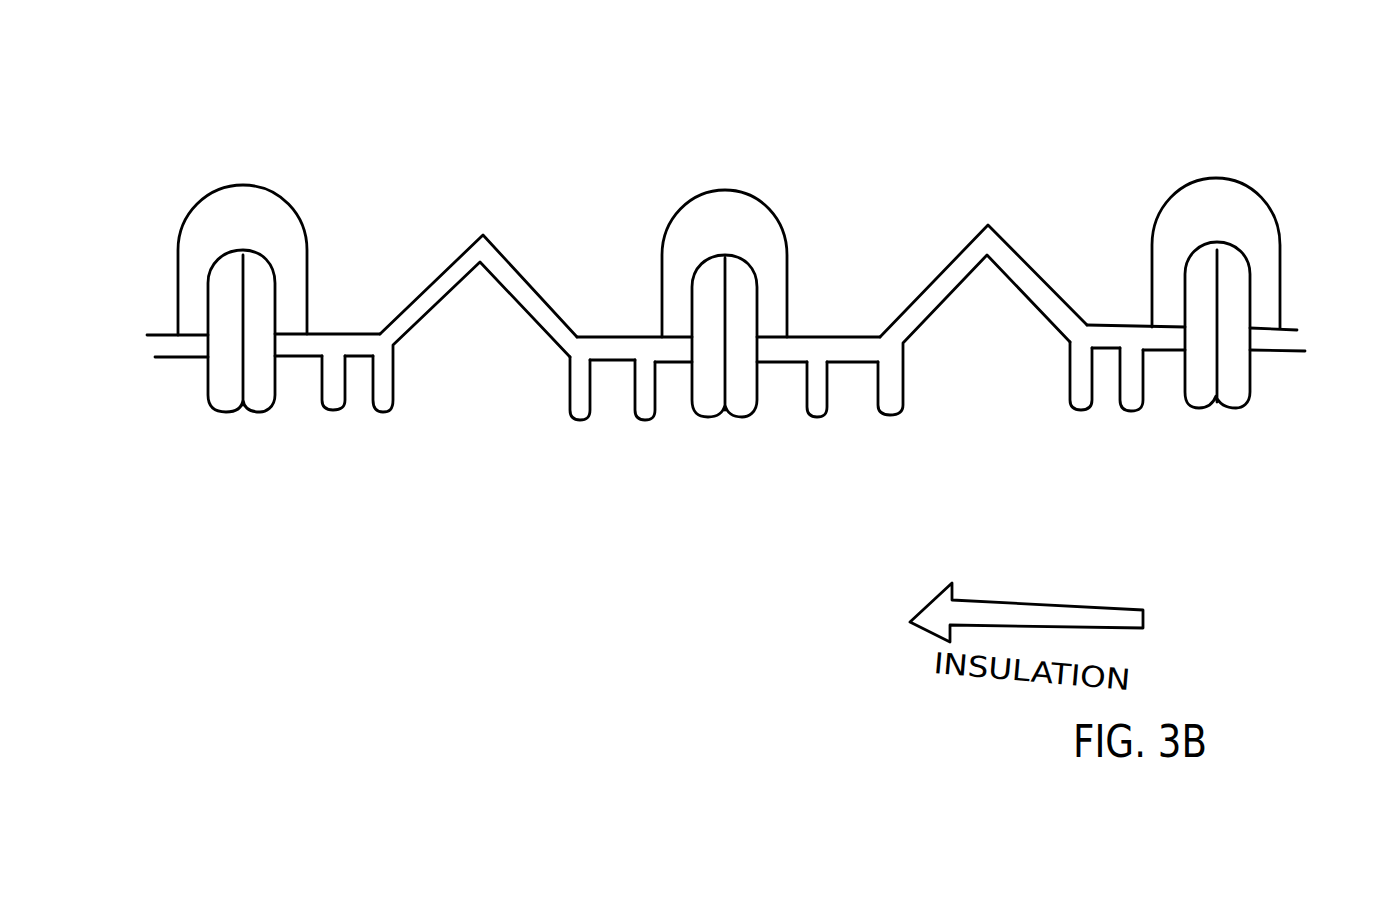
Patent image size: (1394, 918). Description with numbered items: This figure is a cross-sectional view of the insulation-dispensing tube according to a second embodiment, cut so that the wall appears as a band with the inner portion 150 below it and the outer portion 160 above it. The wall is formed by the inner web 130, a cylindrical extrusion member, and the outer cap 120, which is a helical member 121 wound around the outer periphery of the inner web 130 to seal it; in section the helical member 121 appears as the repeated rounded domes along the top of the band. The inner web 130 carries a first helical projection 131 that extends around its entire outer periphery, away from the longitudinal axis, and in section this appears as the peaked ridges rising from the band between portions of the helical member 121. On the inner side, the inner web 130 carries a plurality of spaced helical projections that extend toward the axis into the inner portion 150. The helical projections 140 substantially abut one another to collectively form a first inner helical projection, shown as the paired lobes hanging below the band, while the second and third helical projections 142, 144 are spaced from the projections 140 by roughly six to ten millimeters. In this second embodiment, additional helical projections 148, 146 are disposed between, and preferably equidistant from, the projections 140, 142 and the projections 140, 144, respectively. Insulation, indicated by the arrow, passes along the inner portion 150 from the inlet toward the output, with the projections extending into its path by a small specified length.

The outer cap 120 is at (262, 197).
The helical member 121 is at (1178, 163).
The inner web 130 is at (530, 283).
The first helical projection 131 is at (1010, 243).
The helical projections 140 is at (260, 429).
The second helical projection 142 is at (396, 425).
The third helical projection 144 is at (586, 435).
The additional helical projection 146 is at (652, 435).
The additional helical projection 148 is at (343, 420).
The inner portion 150 is at (1272, 446).
The outer portion 160 is at (1236, 116).